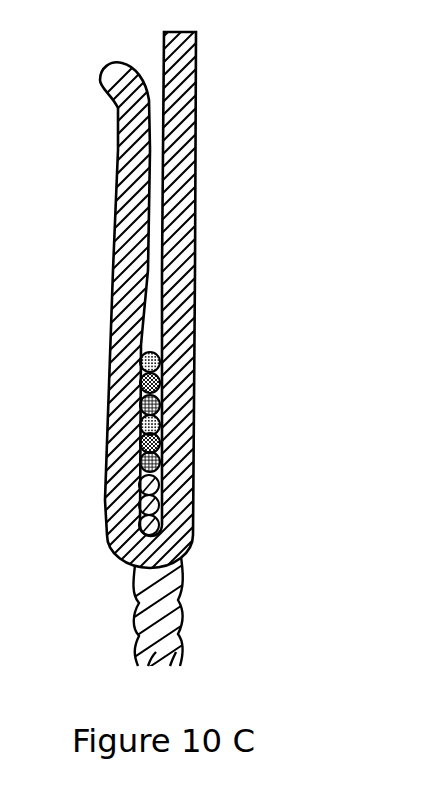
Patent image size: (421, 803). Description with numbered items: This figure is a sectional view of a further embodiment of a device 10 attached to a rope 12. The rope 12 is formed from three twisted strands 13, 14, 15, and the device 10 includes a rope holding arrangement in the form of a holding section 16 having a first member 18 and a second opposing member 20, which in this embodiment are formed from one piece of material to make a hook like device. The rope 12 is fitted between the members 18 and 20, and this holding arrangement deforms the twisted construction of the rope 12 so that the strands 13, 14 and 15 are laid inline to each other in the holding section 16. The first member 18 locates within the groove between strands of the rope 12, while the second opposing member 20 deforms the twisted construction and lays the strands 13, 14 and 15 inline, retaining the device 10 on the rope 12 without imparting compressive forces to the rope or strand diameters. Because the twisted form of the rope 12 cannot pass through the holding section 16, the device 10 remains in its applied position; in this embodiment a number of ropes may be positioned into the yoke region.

The device 10 is at (312, 265).
The rope 12 is at (203, 612).
The twisted strand 13 is at (140, 381).
The twisted strand 14 is at (140, 360).
The twisted strand 15 is at (140, 403).
The holding section 16 is at (217, 447).
The first member 18 is at (196, 205).
The second opposing member 20 is at (118, 192).